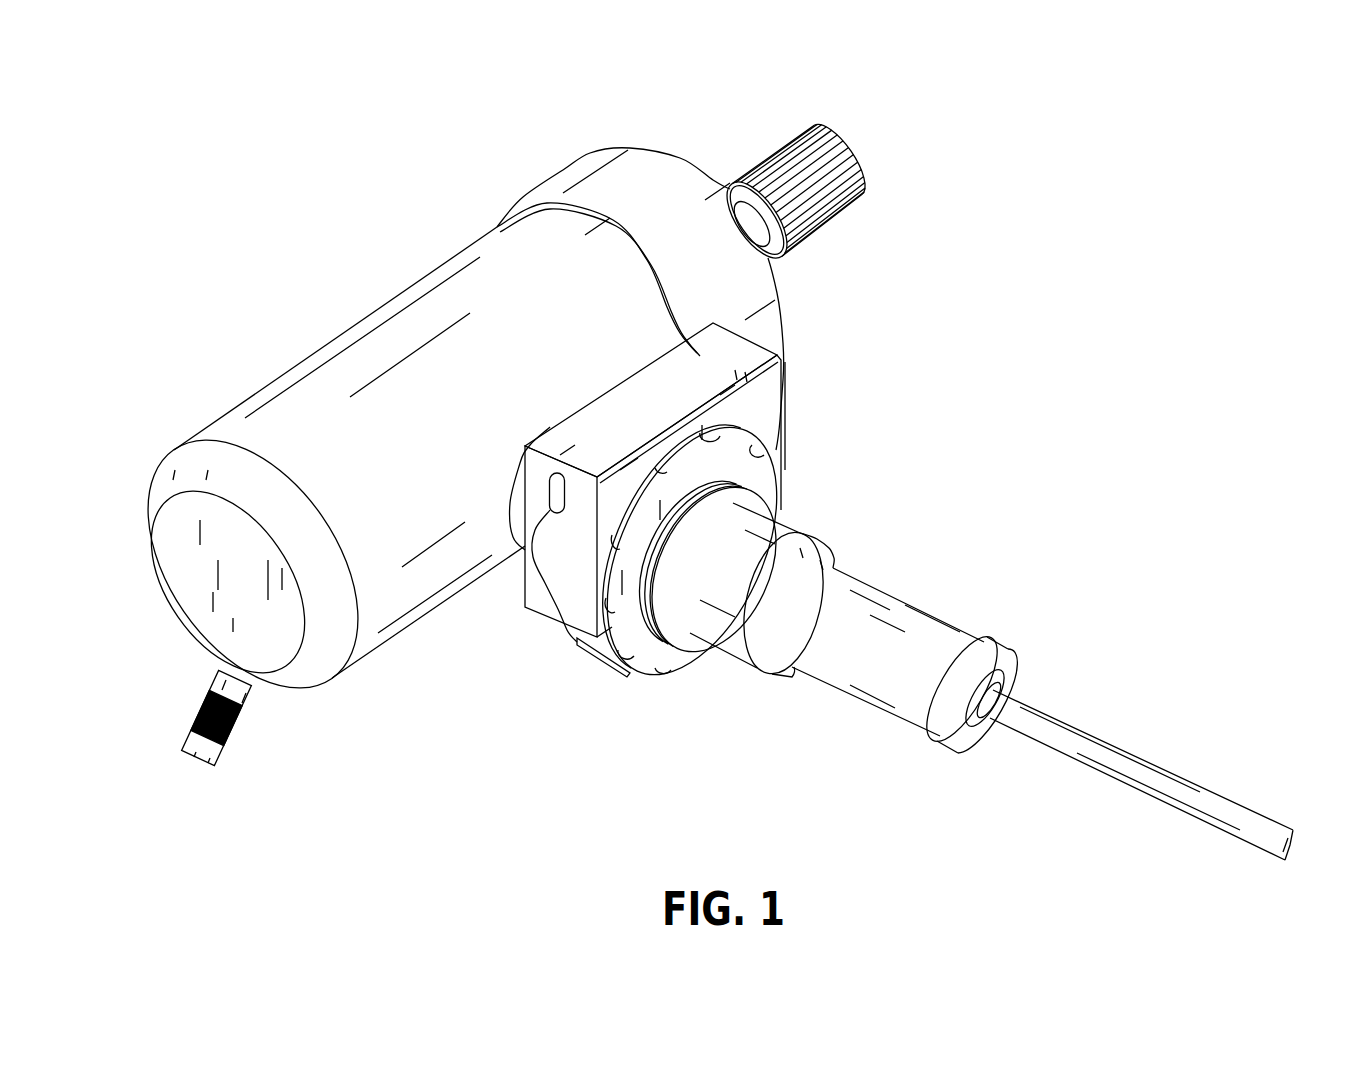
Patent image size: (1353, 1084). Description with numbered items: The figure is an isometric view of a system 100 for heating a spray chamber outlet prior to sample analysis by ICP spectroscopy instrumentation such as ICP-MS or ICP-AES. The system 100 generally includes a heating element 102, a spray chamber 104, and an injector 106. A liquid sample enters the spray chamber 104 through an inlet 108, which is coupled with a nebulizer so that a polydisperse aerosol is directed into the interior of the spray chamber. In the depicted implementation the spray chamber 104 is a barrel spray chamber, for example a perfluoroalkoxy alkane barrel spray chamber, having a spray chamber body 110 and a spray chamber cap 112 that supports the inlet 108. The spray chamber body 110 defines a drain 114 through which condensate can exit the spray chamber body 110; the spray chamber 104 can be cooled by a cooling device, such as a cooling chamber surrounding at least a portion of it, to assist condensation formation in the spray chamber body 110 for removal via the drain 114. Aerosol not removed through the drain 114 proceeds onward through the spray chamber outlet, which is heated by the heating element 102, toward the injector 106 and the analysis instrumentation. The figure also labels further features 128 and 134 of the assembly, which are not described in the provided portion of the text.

The system 100 is at (1204, 242).
The heating element 102 is at (770, 380).
The spray chamber 104 is at (403, 293).
The injector 106 is at (907, 600).
The inlet 108 is at (797, 134).
The spray chamber body 110 is at (305, 402).
The spray chamber cap 112 is at (578, 178).
The drain 114 is at (188, 742).
The mounting slot 128 is at (562, 640).
The lock nut 134 is at (643, 655).